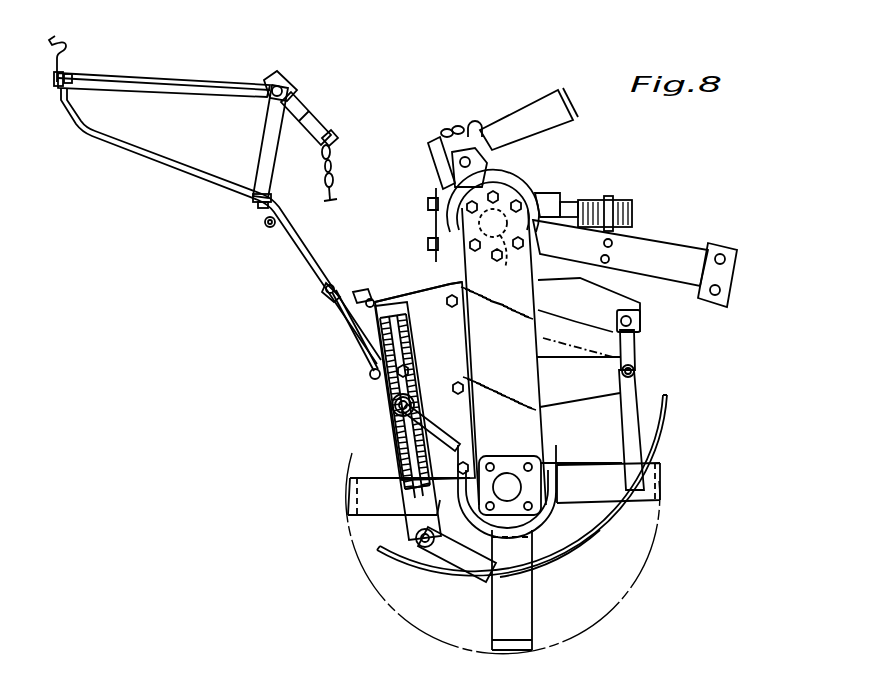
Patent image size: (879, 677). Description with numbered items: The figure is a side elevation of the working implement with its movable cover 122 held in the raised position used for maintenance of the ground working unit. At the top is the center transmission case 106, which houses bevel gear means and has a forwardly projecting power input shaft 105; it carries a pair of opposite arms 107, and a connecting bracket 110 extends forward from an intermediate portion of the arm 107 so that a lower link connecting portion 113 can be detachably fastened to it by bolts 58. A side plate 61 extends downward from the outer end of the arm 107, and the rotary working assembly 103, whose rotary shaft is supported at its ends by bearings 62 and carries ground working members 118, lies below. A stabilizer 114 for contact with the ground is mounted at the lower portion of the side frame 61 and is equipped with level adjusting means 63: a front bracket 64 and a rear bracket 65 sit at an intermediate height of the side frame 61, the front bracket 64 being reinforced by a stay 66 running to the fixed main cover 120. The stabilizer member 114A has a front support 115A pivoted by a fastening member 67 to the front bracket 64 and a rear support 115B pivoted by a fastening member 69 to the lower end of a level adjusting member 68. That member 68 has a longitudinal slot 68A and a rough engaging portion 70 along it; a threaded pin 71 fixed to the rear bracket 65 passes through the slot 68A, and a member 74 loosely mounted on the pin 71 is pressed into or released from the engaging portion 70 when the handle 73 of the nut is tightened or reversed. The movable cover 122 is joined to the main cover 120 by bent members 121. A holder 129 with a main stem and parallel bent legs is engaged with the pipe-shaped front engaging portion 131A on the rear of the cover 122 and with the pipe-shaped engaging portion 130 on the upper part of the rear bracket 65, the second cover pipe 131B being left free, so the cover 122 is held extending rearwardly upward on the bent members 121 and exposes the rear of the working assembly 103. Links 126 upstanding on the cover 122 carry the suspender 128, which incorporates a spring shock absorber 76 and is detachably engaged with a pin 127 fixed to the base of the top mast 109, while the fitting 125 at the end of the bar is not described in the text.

The bolts 58 is at (605, 256).
The side plate 61 is at (530, 292).
The bearings 62 is at (520, 488).
The level adjusting means 63 is at (388, 441).
The front bracket 64 is at (586, 394).
The rear bracket 65 is at (421, 288).
The stay 66 is at (636, 348).
The fastening member 67 is at (636, 373).
The level adjusting member 68 is at (408, 500).
The slot 68A is at (408, 371).
The fastening member 69 is at (420, 547).
The rough engaging portion 70 is at (393, 328).
The threaded pin 71 is at (413, 405).
The handle 73 is at (453, 438).
The member 74 is at (393, 403).
The shock absorber 76 is at (312, 125).
The rotary working assembly 103 is at (405, 612).
The power input shaft 105 is at (618, 207).
The center transmission case 106 is at (529, 187).
The arms 107 is at (485, 371).
The top mast 109 is at (513, 120).
The connecting bracket 110 is at (573, 228).
The lower link connecting portion 113 is at (736, 270).
The stabilizer 114 is at (622, 521).
The stabilizer member 114A is at (576, 556).
The front support 115A is at (638, 397).
The rear support 115B is at (445, 556).
The ground working members 118 is at (358, 500).
The main cover 120 is at (638, 310).
The bent members 121 is at (363, 292).
The movable cover 122 is at (297, 242).
The hook 125 is at (68, 66).
The links 126 is at (265, 134).
The pin 127 is at (469, 116).
The suspender 128 is at (336, 171).
The holder 129 is at (352, 333).
The engaging portion 130 is at (369, 378).
The front engaging portion 131A is at (337, 283).
The engaging portion 131B is at (266, 226).